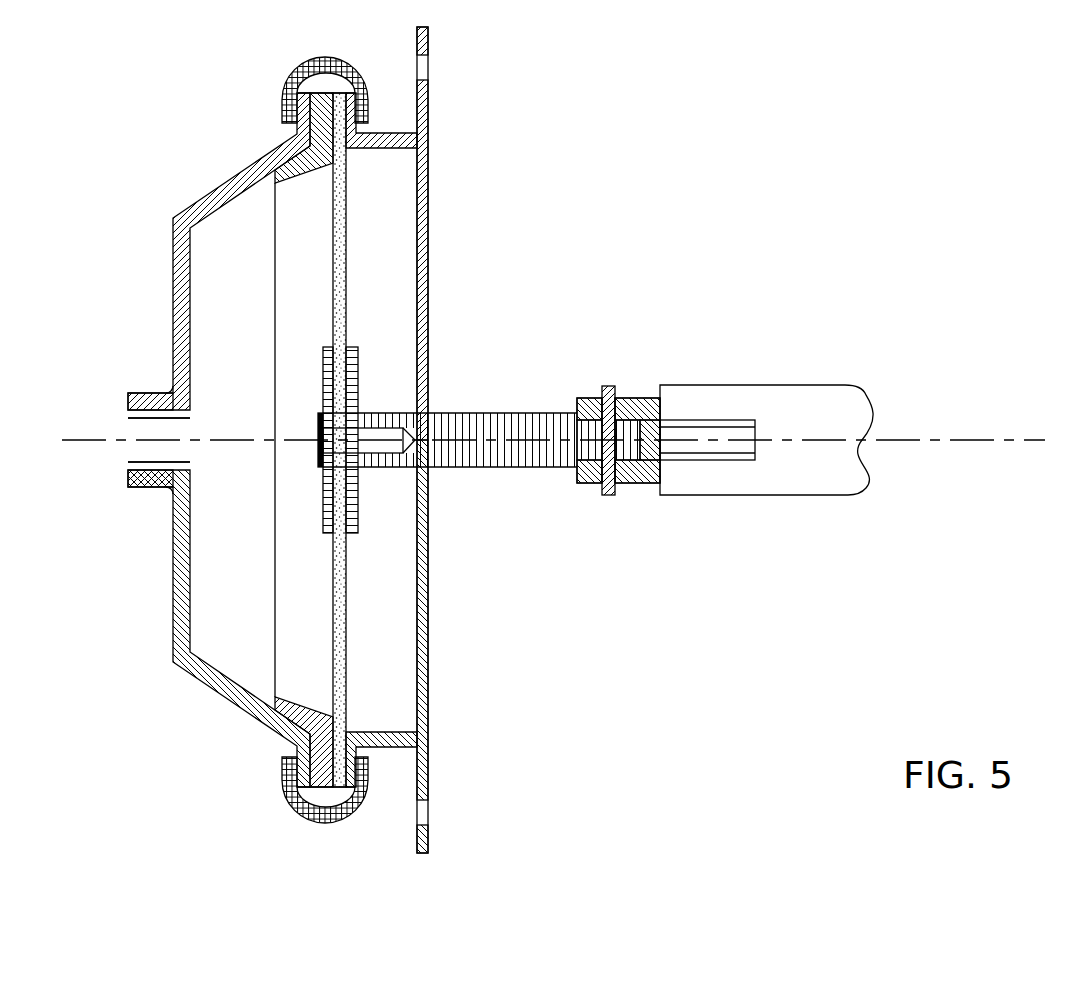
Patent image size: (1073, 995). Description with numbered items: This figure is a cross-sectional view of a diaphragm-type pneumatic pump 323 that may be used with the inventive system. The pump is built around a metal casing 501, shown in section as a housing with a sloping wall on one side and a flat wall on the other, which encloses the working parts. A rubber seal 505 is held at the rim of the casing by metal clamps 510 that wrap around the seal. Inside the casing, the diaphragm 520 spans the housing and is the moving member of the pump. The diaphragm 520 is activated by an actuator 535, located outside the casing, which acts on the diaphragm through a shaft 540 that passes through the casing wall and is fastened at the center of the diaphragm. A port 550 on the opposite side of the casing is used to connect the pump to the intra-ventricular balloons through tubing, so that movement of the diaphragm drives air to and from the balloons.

The metal casing 501 is at (417, 45).
The rubber seal 505 is at (316, 166).
The metal clamps 510 is at (295, 816).
The diaphragm 520 is at (344, 177).
The actuator 535 is at (866, 413).
The shaft 540 is at (485, 467).
The port 550 is at (135, 433).
The diaphragm-type pneumatic pump 323 is at (521, 669).